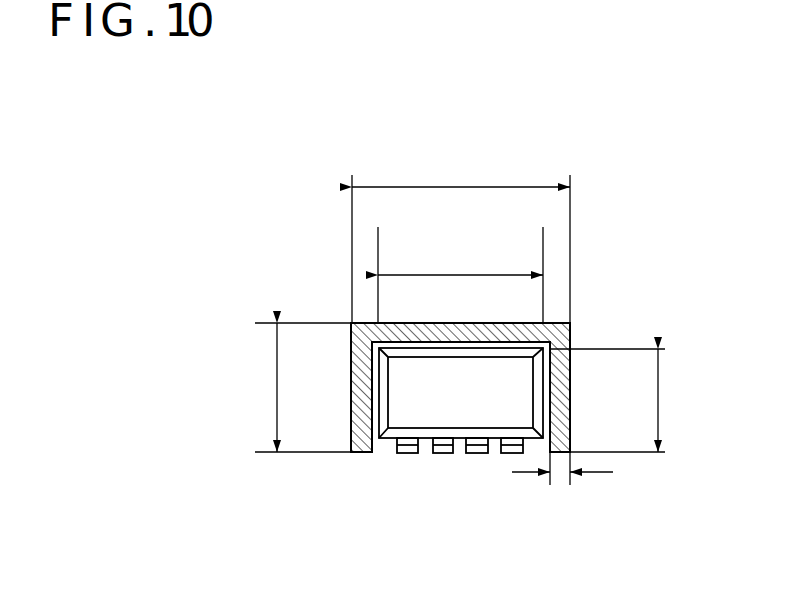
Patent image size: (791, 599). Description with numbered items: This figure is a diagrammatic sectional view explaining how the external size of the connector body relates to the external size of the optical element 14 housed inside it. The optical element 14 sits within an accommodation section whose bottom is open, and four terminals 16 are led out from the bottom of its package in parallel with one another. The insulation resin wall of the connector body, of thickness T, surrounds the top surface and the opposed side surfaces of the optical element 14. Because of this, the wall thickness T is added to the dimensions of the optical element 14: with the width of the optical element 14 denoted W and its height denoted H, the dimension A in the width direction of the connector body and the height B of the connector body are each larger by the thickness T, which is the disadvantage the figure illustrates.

The optical element 14 is at (399, 396).
The terminals 16 is at (441, 455).
The dimension in the width direction of the connector body A is at (469, 187).
The dimension in the width direction of the optical element W is at (471, 275).
The height of the connector body B is at (277, 386).
The height of the optical element H is at (665, 400).
The thickness of the insulation resin wall T is at (560, 478).